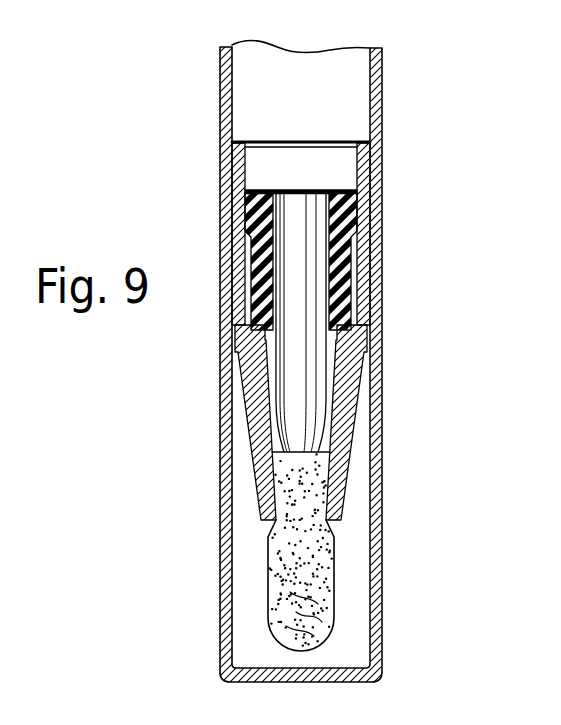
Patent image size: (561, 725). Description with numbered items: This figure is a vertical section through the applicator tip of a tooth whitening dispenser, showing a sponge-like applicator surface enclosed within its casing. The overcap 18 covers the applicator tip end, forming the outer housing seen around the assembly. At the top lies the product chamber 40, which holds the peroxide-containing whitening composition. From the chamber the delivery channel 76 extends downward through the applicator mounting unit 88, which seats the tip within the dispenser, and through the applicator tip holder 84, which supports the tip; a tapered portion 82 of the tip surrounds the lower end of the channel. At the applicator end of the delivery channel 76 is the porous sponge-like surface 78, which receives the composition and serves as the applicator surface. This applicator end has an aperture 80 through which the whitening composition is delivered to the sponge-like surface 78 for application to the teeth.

The overcap 18 is at (382, 442).
The product chamber 40 is at (338, 92).
The applicator mounting unit 88 is at (348, 213).
The delivery channel 76 is at (300, 283).
The nozzle tip 82 is at (330, 352).
The applicator tip holder 84 is at (240, 382).
The porous sponge-like surface 78 is at (333, 568).
The aperture 80 is at (328, 606).